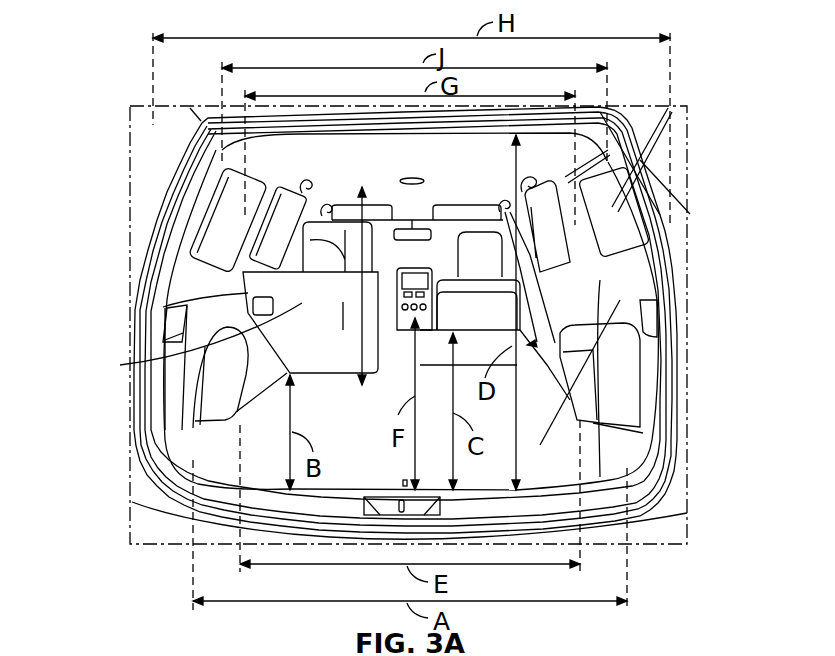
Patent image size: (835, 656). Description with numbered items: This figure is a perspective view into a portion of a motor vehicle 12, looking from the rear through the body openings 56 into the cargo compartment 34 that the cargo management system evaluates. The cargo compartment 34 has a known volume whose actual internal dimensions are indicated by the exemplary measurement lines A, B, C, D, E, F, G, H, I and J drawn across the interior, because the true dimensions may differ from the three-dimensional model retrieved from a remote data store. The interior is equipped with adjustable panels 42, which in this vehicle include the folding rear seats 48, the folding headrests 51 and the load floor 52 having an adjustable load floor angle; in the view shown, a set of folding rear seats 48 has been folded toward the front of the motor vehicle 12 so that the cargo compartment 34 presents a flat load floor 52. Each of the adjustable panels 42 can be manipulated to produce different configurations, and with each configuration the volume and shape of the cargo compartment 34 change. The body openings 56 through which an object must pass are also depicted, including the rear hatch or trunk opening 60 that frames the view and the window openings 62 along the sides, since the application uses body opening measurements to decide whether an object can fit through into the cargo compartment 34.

The motor vehicle 12 is at (660, 190).
The cargo compartment 34 is at (120, 447).
The adjustable panels 42 is at (407, 294).
The folding rear seats 48 is at (120, 365).
The folding headrests 51 is at (300, 262).
The load floor 52 is at (407, 294).
The body openings 56 is at (691, 183).
The rear hatch or trunk openings 60 is at (678, 255).
The window openings 62 is at (265, 232).